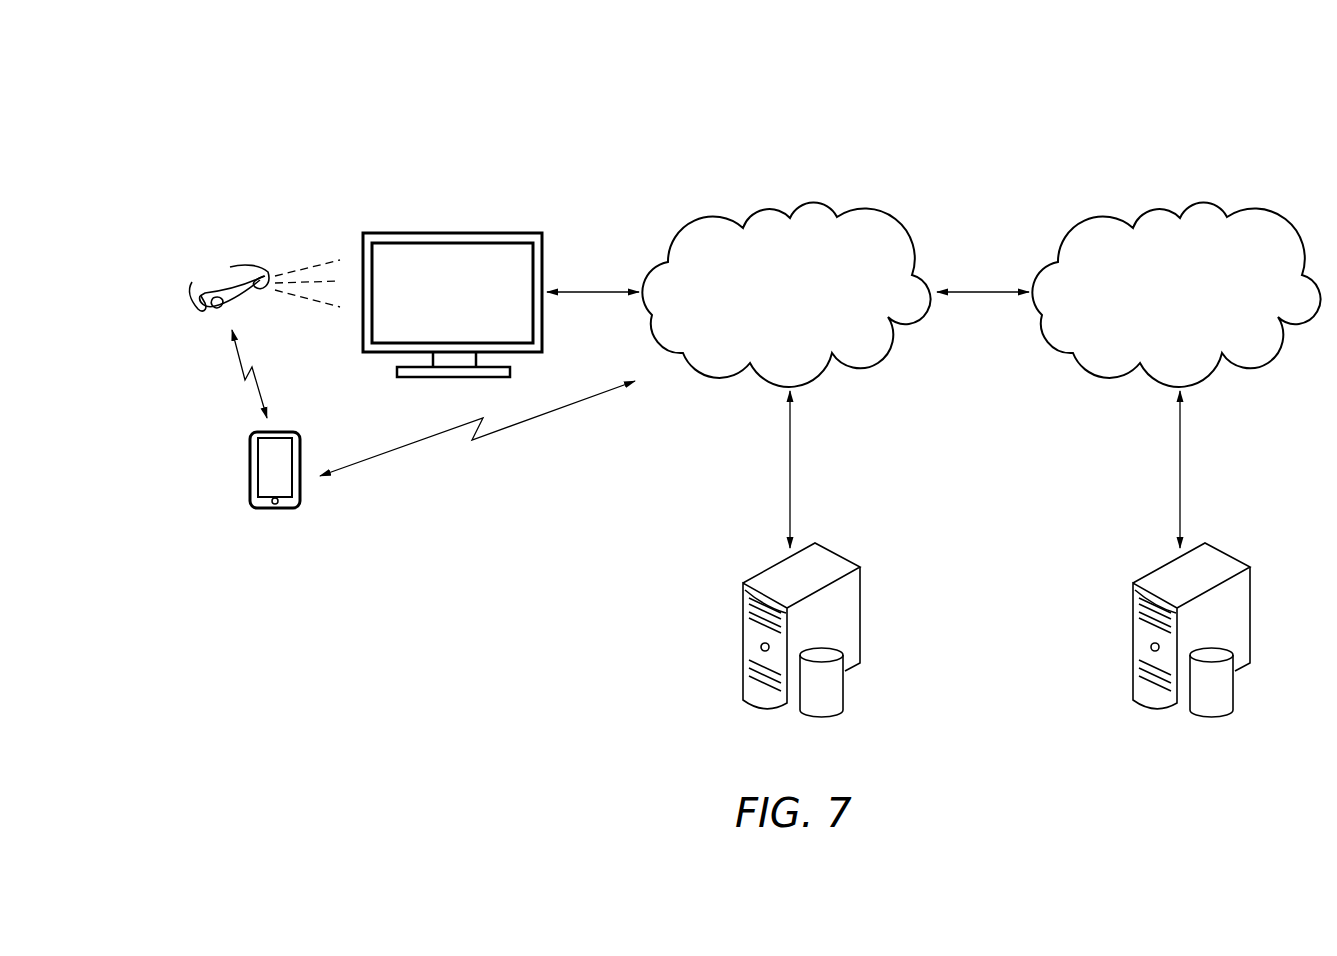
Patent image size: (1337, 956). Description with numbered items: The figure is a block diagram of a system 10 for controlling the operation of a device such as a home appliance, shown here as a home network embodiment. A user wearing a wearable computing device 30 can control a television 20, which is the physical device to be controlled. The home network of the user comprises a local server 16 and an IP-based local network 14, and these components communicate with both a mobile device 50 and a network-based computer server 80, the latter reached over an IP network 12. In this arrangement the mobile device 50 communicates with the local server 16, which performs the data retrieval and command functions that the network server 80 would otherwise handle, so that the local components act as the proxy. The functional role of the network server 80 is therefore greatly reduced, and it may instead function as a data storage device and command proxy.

The system 10 is at (1088, 128).
The IP network 12 is at (1164, 358).
The IP-based local network 14 is at (774, 358).
The local server 16 is at (742, 636).
The television 20 is at (470, 233).
The wearable computing device 30 is at (199, 278).
The mobile device 50 is at (250, 472).
The network-based computer server 80 is at (1132, 636).